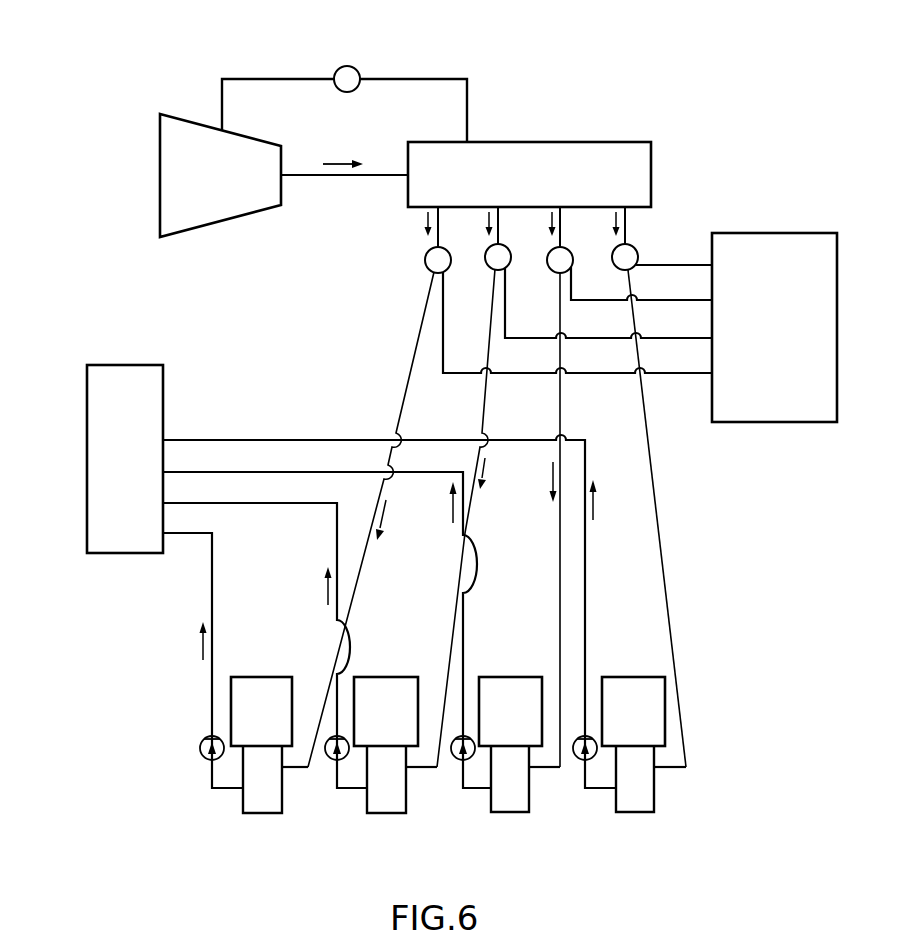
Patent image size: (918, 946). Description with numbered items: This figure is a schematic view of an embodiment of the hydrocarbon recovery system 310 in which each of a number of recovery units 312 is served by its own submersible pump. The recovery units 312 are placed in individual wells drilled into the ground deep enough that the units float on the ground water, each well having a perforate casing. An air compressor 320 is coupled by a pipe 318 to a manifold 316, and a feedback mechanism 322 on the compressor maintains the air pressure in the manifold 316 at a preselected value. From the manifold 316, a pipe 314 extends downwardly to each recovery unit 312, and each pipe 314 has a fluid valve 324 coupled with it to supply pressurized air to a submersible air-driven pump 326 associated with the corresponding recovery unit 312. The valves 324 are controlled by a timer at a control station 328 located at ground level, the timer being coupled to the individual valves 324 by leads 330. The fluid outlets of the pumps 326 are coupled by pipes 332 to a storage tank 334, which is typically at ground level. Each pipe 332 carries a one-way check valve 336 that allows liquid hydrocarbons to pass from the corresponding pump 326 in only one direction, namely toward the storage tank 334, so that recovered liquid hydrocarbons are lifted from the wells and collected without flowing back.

The system 310 is at (603, 113).
The recovery unit 312 is at (270, 684).
The pipe 314 is at (482, 412).
The manifold 316 is at (547, 157).
The pipe 318 is at (330, 177).
The air compressor 320 is at (208, 213).
The feedback mechanism 322 is at (347, 66).
The fluid valve 324 is at (492, 263).
The submersible air-driven pump 326 is at (265, 800).
The control station 328 is at (797, 236).
The leads 330 is at (665, 375).
The pipe 332 is at (205, 533).
The storage tank 334 is at (112, 380).
The one-way check valve 336 is at (203, 759).